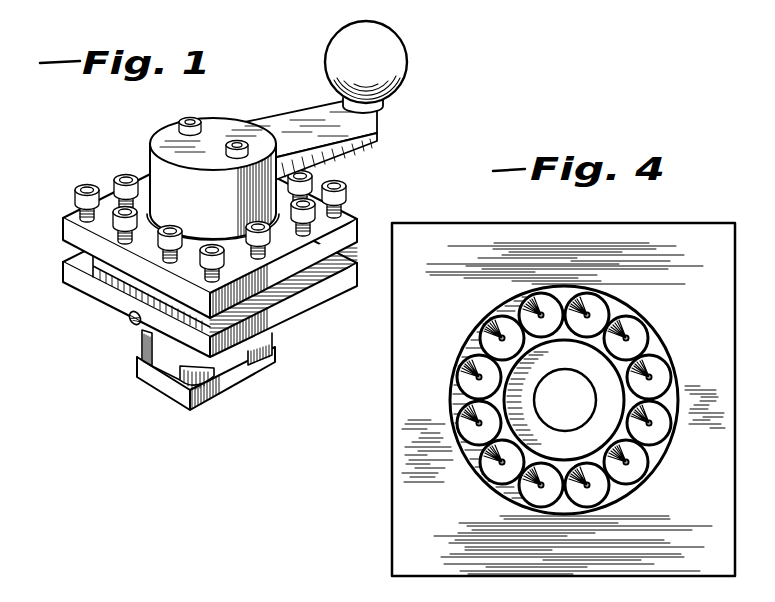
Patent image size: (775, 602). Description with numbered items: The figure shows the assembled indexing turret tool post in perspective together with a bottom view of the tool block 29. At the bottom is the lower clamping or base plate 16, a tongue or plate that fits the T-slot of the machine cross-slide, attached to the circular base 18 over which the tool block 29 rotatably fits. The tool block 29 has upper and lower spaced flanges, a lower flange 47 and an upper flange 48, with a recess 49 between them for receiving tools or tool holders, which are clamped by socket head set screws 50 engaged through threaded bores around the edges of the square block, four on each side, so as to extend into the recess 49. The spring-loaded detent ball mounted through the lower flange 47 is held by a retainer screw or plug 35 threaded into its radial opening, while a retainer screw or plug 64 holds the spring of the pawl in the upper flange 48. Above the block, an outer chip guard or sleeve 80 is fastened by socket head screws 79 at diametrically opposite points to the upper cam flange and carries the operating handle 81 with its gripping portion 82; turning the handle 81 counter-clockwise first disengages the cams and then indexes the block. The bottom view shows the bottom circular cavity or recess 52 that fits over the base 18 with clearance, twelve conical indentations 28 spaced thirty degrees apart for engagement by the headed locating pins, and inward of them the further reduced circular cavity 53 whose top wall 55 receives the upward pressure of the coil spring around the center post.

In FIG. 1, the lower clamping or base plate 16 is at (222, 383).
In FIG. 1, the base 18 is at (275, 340).
In FIG. 4, the conical indentations 28 is at (637, 473).
In FIG. 1, the tool block 29 is at (110, 318).
In FIG. 4, the tool block 29 is at (388, 379).
In FIG. 1, the retainer screw or plug 35 is at (131, 324).
In FIG. 1, the lower flange 47 is at (75, 283).
In FIG. 4, the lower flange 47 is at (685, 224).
In FIG. 1, the upper flange 48 is at (63, 223).
In FIG. 1, the recess 49 is at (67, 253).
In FIG. 1, the socket head set screws 50 is at (343, 182).
In FIG. 4, the bottom circular cavity or recess 52 is at (659, 331).
In FIG. 4, the further reduced circular cavity 53 is at (623, 399).
In FIG. 4, the top wall 55 is at (590, 386).
In FIG. 1, the retainer screw or plug 64 is at (135, 271).
In FIG. 1, the socket head screws 79 is at (237, 140).
In FIG. 1, the outer chip guard or sleeve 80 is at (155, 165).
In FIG. 1, the operating handle 81 is at (378, 137).
In FIG. 1, the gripping portion 82 is at (392, 64).